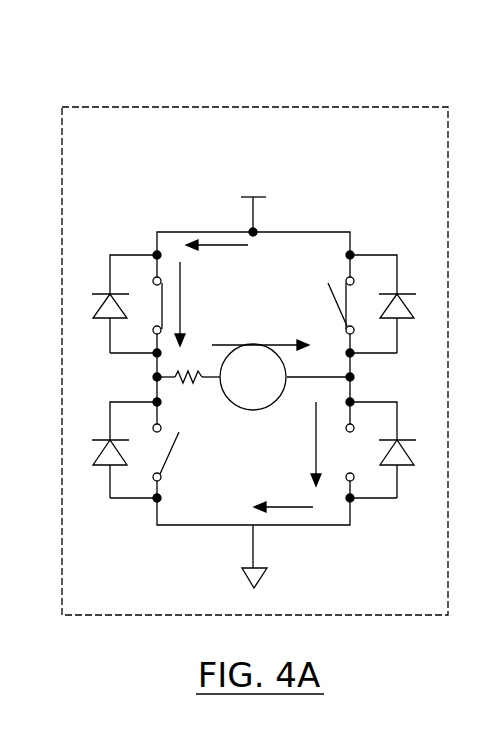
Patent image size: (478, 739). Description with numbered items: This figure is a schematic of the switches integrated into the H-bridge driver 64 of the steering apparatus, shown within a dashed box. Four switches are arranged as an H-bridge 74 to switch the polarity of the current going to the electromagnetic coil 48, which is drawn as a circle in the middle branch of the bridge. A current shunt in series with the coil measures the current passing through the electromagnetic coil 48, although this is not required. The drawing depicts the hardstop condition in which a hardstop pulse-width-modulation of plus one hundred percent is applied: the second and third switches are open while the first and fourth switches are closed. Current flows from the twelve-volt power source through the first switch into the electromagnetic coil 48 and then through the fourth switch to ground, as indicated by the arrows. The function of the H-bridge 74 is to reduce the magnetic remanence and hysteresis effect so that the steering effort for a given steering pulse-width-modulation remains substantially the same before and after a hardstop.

The H-bridge 74 is at (254, 319).
The H-bridge driver 64 is at (221, 107).
The electromagnetic coil 48 is at (237, 391).